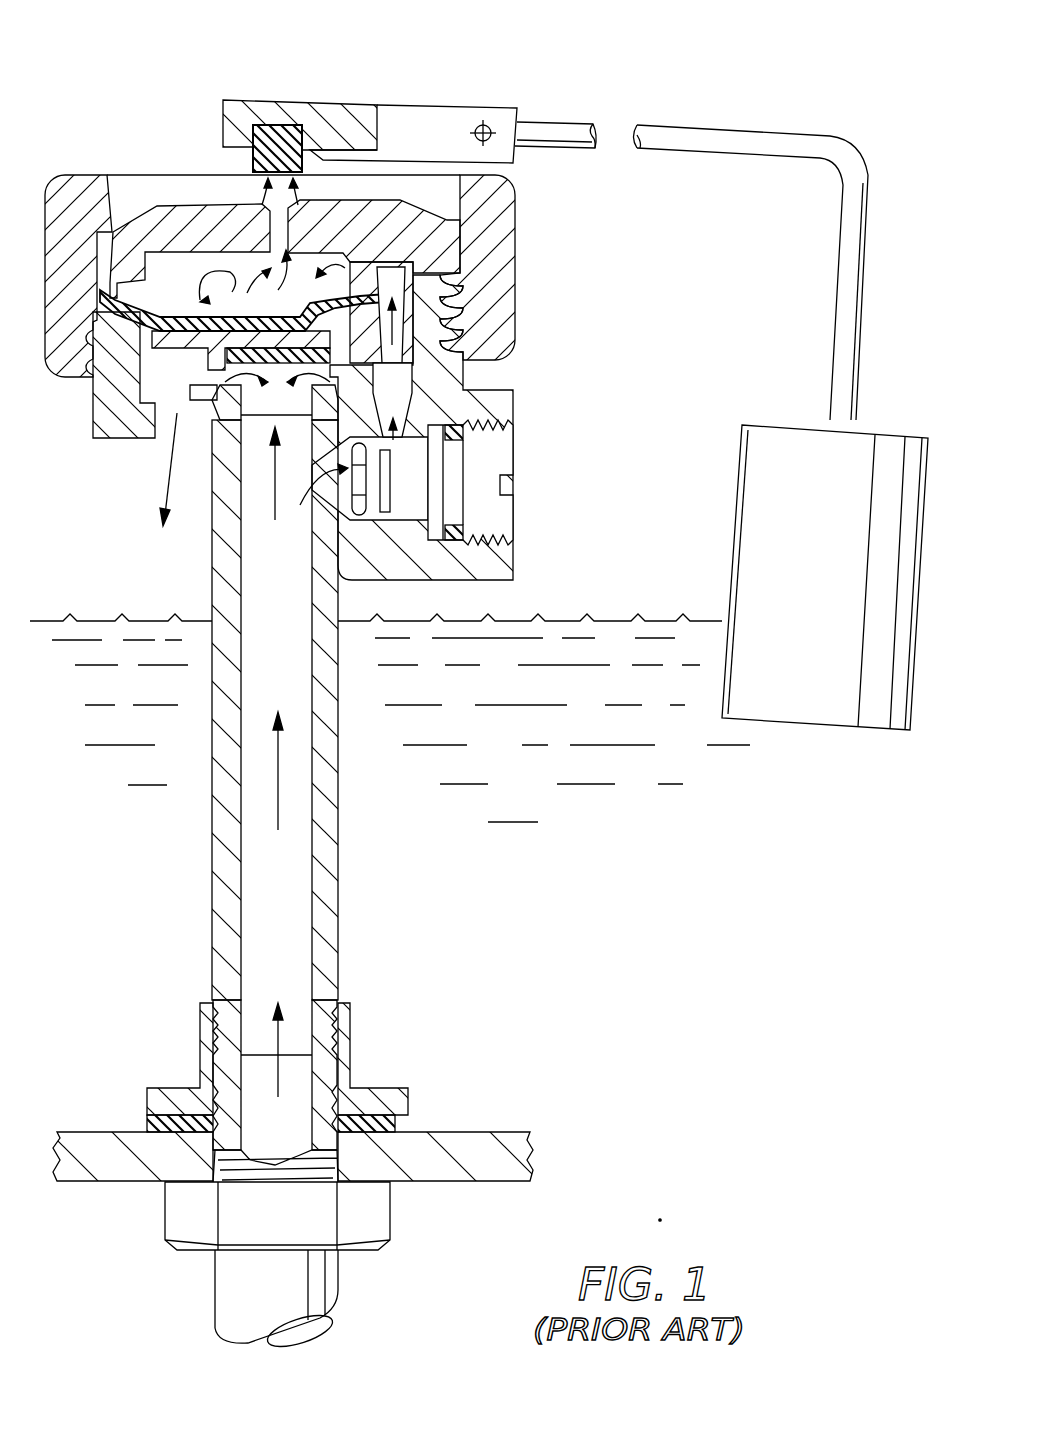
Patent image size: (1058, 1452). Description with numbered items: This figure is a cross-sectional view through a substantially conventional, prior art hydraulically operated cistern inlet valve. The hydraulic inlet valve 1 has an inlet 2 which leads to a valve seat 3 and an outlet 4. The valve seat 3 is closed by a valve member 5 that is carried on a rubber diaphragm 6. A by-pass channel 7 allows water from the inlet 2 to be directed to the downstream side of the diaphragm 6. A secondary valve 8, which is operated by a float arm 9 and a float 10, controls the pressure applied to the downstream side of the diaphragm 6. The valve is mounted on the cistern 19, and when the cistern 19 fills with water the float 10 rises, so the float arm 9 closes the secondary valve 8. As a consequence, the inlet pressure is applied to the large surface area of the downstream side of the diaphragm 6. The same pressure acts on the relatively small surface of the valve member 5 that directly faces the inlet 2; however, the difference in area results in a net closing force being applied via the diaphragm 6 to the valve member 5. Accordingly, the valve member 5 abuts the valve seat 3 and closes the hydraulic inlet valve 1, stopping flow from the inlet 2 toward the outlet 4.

The hydraulic inlet valve 1 is at (166, 106).
The inlet 2 is at (288, 868).
The valve seat 3 is at (247, 383).
The outlet 4 is at (165, 433).
The valve member 5 is at (280, 405).
The rubber diaphragm 6 is at (193, 307).
The by-pass channel 7 is at (388, 396).
The secondary valve 8 is at (318, 190).
The float arm 9 is at (695, 140).
The float 10 is at (772, 477).
The cistern 19 is at (458, 1132).